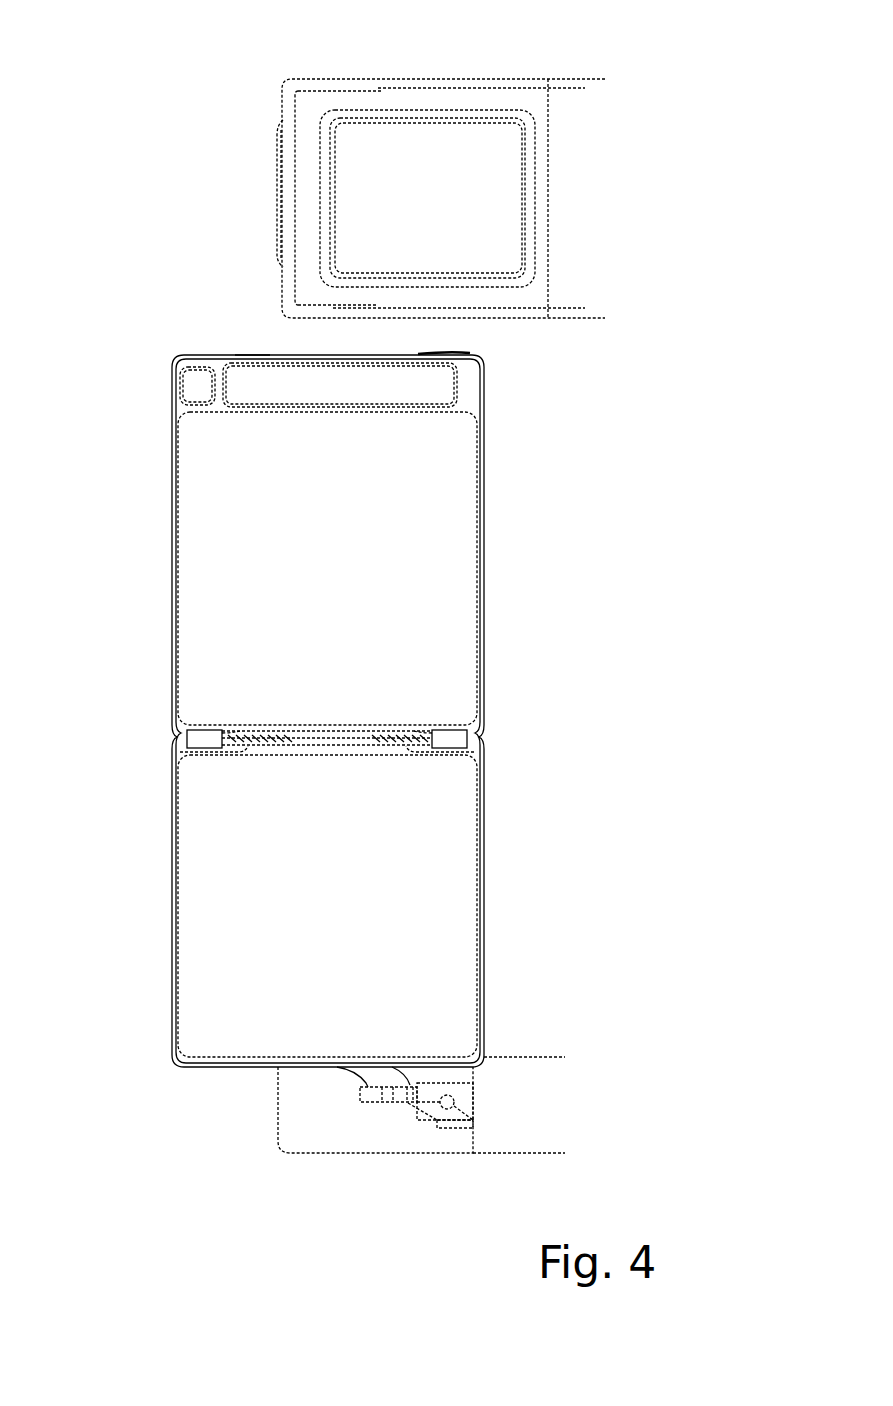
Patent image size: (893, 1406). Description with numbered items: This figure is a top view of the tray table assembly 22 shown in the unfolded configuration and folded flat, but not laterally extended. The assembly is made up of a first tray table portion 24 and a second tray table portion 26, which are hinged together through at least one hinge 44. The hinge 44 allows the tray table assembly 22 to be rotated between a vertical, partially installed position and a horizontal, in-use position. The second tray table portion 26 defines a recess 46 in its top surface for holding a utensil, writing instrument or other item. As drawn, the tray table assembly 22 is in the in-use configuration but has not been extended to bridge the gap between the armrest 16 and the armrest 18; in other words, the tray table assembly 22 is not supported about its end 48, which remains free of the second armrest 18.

The armrest 16 is at (352, 1142).
The armrest 18 is at (398, 98).
The tray table assembly 22 is at (180, 1108).
The first tray table portion 24 is at (452, 856).
The second tray table portion 26 is at (428, 512).
The hinge 44 is at (208, 730).
The recess 46 is at (438, 385).
The end 48 is at (253, 338).